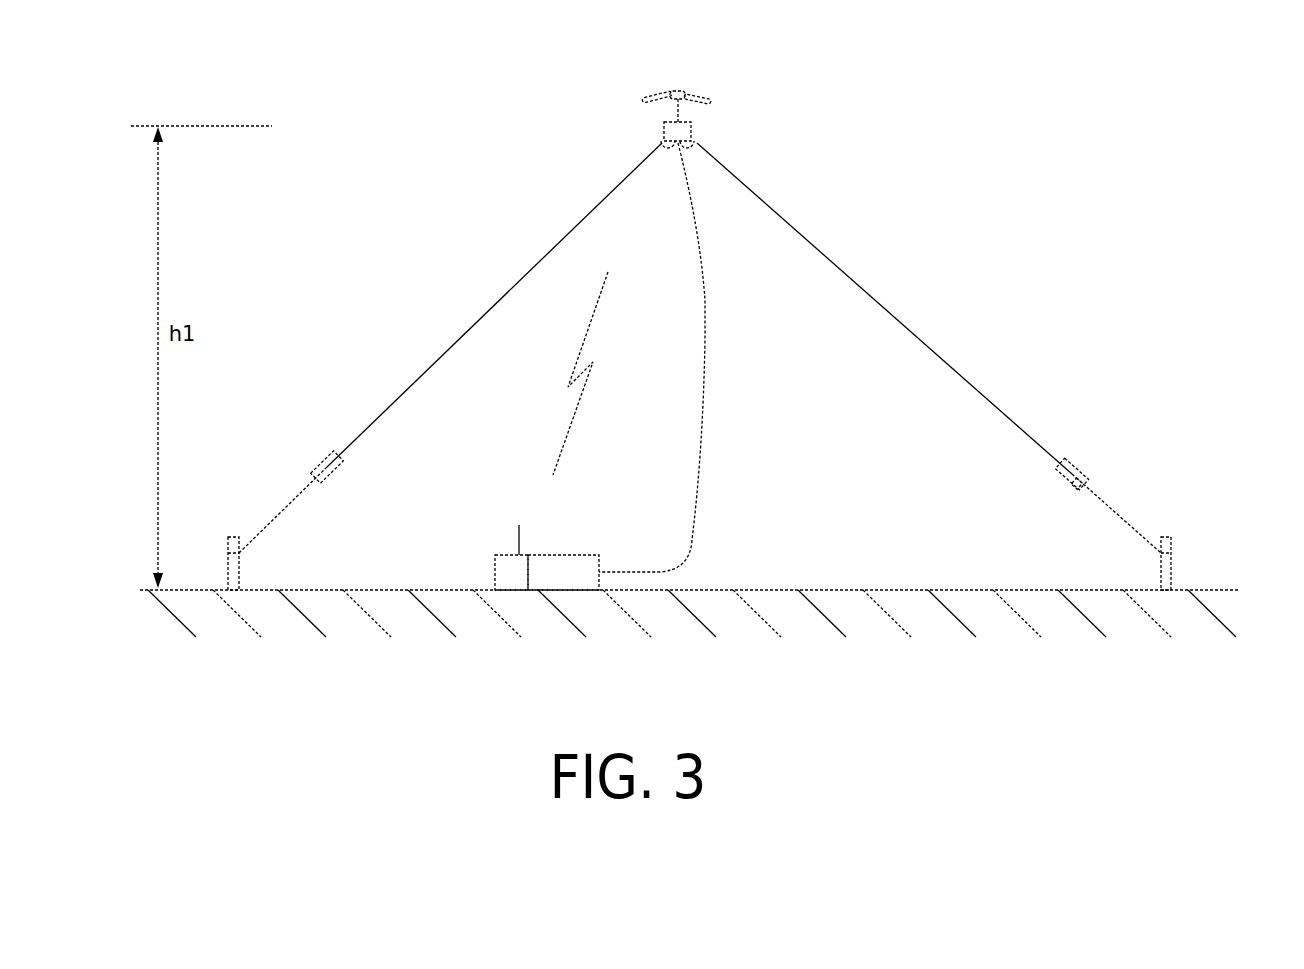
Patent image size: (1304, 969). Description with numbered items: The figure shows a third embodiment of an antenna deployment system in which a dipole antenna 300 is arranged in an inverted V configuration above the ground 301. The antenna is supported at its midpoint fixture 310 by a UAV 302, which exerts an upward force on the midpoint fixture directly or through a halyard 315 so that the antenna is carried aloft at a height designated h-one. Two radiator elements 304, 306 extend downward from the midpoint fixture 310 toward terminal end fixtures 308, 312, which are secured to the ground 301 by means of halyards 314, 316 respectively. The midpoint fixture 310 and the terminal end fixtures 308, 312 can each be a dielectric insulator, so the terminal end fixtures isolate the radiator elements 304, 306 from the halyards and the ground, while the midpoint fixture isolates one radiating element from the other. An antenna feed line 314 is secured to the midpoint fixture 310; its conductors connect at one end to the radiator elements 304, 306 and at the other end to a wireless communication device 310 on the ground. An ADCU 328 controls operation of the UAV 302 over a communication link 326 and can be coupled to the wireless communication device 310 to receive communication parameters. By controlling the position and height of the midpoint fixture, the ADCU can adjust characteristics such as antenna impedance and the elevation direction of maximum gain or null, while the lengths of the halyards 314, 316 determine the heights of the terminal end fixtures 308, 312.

The dipole antenna 300 is at (415, 165).
The ground 301 is at (1022, 588).
The UAV 302 is at (652, 97).
The radiator element 304 is at (433, 357).
The radiator element 306 is at (930, 343).
The terminal end fixture 308 is at (318, 463).
The midpoint fixture 310 is at (663, 127).
The terminal end fixture 312 is at (1085, 475).
The halyard 314 is at (698, 472).
The halyard 315 is at (682, 105).
The halyard 316 is at (1127, 523).
The communication link 326 is at (565, 360).
The ADCU 328 is at (503, 555).